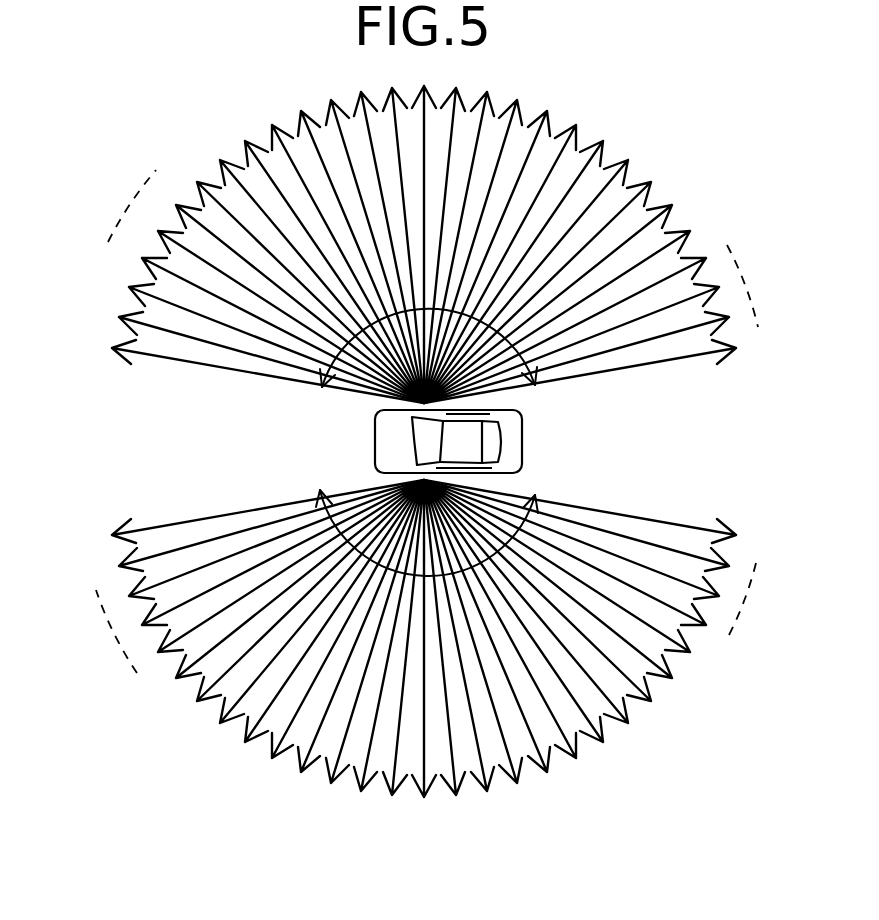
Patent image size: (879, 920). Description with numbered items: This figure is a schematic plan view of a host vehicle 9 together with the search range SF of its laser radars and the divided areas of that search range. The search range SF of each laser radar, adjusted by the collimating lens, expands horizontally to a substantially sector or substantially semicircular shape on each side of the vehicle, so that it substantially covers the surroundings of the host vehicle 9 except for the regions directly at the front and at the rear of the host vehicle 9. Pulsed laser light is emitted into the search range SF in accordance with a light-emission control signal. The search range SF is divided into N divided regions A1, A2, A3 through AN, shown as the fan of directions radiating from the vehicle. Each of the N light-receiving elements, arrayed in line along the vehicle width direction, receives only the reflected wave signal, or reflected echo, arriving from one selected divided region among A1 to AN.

The host vehicle 9 is at (519, 443).
The search range SF is at (308, 497).
The divided region A1 is at (247, 441).
The divided region A2 is at (250, 440).
The divided region A3 is at (257, 330).
The divided region AN is at (602, 443).